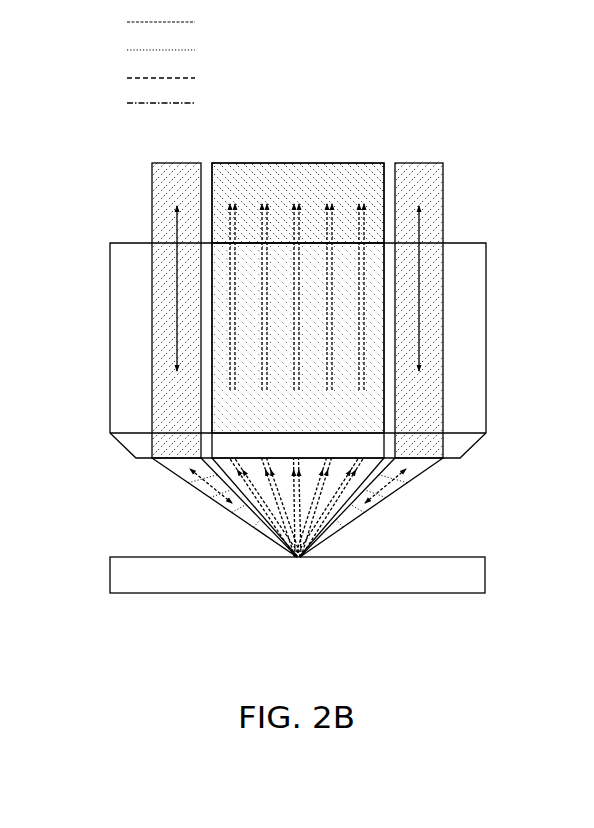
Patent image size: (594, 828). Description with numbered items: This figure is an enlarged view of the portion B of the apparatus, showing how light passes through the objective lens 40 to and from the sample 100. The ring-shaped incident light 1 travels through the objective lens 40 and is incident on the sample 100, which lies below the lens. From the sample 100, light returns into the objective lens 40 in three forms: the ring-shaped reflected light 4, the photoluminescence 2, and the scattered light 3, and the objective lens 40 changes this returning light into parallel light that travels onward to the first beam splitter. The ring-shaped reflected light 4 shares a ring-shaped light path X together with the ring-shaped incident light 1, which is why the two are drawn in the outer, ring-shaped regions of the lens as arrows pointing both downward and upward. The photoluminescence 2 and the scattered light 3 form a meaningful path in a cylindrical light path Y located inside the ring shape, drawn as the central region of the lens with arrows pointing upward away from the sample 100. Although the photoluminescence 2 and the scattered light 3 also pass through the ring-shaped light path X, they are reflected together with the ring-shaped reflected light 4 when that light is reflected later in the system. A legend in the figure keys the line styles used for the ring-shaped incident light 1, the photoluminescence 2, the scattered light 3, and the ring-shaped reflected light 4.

The ring-shaped incident light 1 is at (172, 23).
The photoluminescence 2 is at (172, 51).
The scattered light 3 is at (172, 79).
The ring-shaped reflected light 4 is at (172, 104).
The objective lens 40 is at (467, 275).
The sample 100 is at (403, 568).
The ring-shaped light path X is at (168, 181).
The cylindrical light path Y is at (300, 177).
The portion B is at (99, 50).